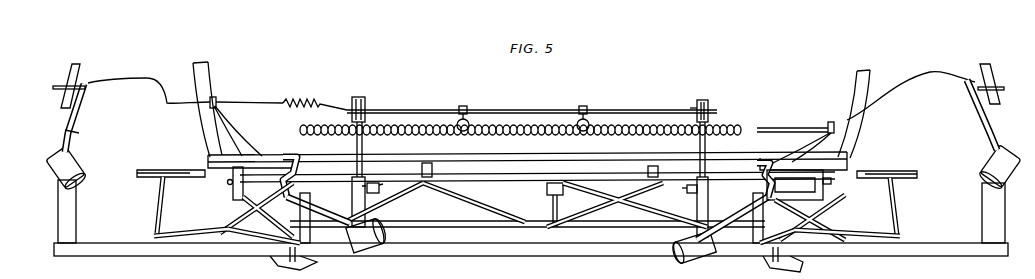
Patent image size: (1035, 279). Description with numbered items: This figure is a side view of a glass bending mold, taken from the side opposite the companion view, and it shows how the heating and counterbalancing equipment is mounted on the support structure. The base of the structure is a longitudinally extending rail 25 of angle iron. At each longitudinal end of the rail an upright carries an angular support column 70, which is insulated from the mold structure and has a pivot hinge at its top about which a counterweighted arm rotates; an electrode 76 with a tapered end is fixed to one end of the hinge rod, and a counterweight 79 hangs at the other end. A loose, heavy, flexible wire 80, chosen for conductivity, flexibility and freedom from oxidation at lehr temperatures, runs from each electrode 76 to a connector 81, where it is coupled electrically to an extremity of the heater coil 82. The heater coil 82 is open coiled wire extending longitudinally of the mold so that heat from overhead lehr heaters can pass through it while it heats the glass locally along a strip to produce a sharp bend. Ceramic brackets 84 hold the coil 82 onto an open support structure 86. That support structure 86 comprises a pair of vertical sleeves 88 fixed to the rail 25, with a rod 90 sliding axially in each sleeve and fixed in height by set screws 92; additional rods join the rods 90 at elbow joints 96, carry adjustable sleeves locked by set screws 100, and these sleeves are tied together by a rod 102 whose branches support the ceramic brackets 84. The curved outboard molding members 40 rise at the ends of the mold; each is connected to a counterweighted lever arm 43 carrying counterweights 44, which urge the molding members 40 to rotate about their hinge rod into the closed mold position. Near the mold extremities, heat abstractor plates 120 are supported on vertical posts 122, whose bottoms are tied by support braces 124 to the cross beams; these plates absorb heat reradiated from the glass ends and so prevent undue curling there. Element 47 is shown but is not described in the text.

The longitudinally extending rail 25 is at (165, 247).
The outboard molding member 40 is at (207, 75).
The counterweighted lever arm 43 is at (728, 230).
The counterweight 44 is at (531, 241).
The diagonal link bar 47 is at (345, 217).
The angular support column 70 is at (65, 128).
The electrode 76 is at (80, 72).
The counterweight 79 is at (73, 168).
The flexible wire 80 is at (146, 78).
The connector 81 is at (216, 100).
The heater coil 82 is at (305, 103).
The ceramic bracket 84 is at (470, 111).
The open support structure 86 is at (533, 108).
The vertical sleeve 88 is at (352, 192).
The rod 90 is at (356, 147).
The set screw 92 is at (378, 188).
The elbow joint 96 is at (366, 100).
The set screw 100 is at (693, 108).
The rod 102 is at (416, 108).
The heat abstractor plate 120 is at (162, 170).
The vertical post 122 is at (158, 201).
The support brace 124 is at (175, 230).